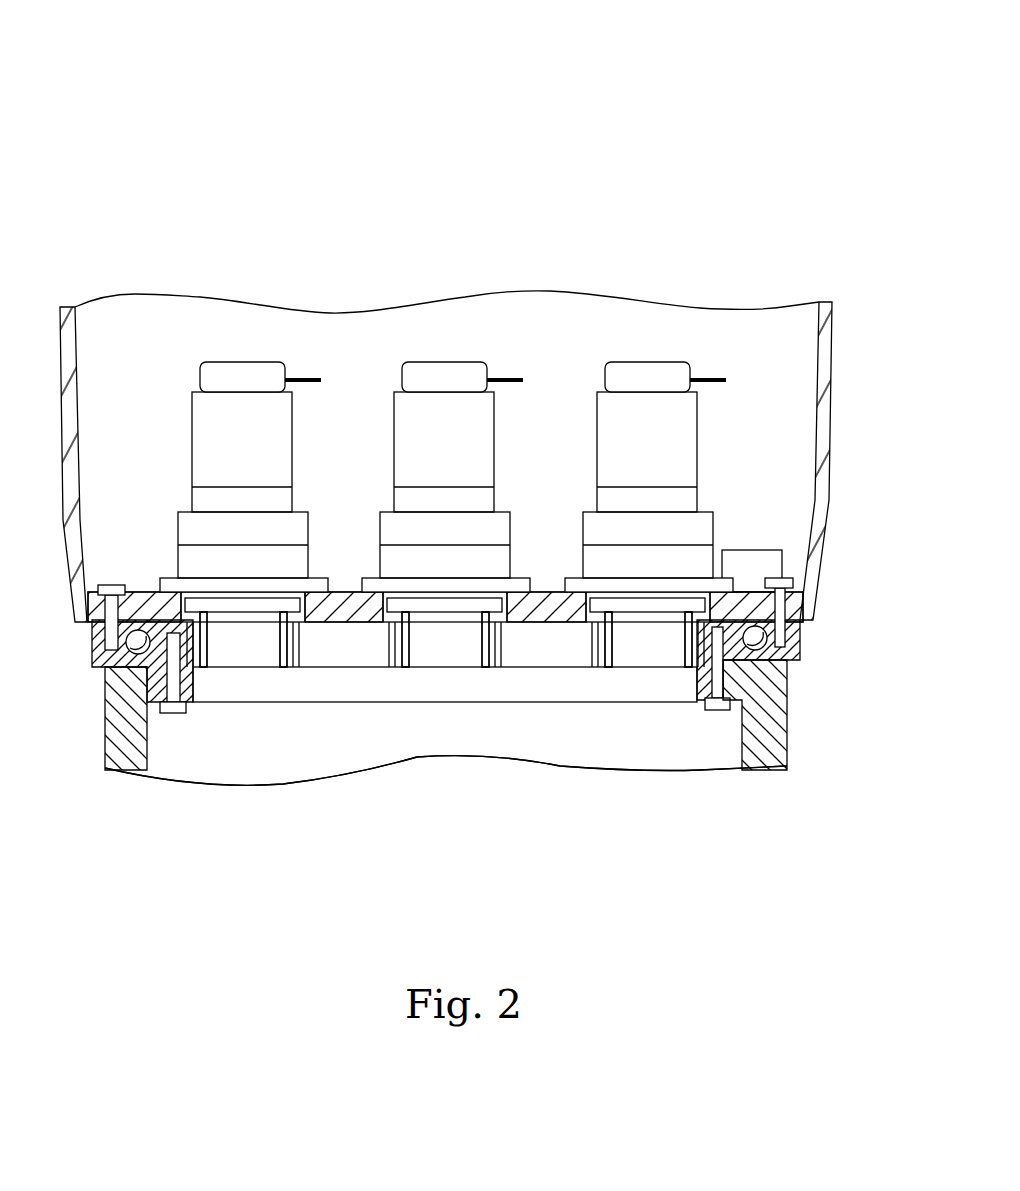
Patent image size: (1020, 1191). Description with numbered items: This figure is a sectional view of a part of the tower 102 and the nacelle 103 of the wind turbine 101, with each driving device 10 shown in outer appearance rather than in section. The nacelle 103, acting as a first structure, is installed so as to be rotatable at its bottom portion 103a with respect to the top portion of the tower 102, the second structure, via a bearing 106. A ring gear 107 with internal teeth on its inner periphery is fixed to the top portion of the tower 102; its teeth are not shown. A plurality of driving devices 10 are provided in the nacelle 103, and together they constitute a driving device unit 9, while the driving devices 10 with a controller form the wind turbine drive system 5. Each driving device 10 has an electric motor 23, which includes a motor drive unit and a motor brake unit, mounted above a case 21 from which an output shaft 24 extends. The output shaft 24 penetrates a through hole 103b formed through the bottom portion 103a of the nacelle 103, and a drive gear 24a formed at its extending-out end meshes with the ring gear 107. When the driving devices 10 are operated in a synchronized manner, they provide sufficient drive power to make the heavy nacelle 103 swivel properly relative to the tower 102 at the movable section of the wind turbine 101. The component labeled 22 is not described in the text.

The wind turbine 101 is at (218, 155).
The wind turbine drive system 5 is at (677, 227).
The driving device unit 9 is at (677, 227).
The nacelle 103 is at (840, 312).
The bottom portion 103a is at (152, 616).
The through hole 103b is at (296, 625).
The driving device 10 is at (182, 378).
The electric motor 23 is at (213, 446).
The case 21 is at (215, 560).
The flange plate 22 is at (283, 585).
The output shaft 24 is at (238, 655).
The drive gear 24a is at (203, 807).
The ring gear 107 is at (348, 652).
The bearing 106 is at (122, 680).
The tower 102 is at (765, 745).